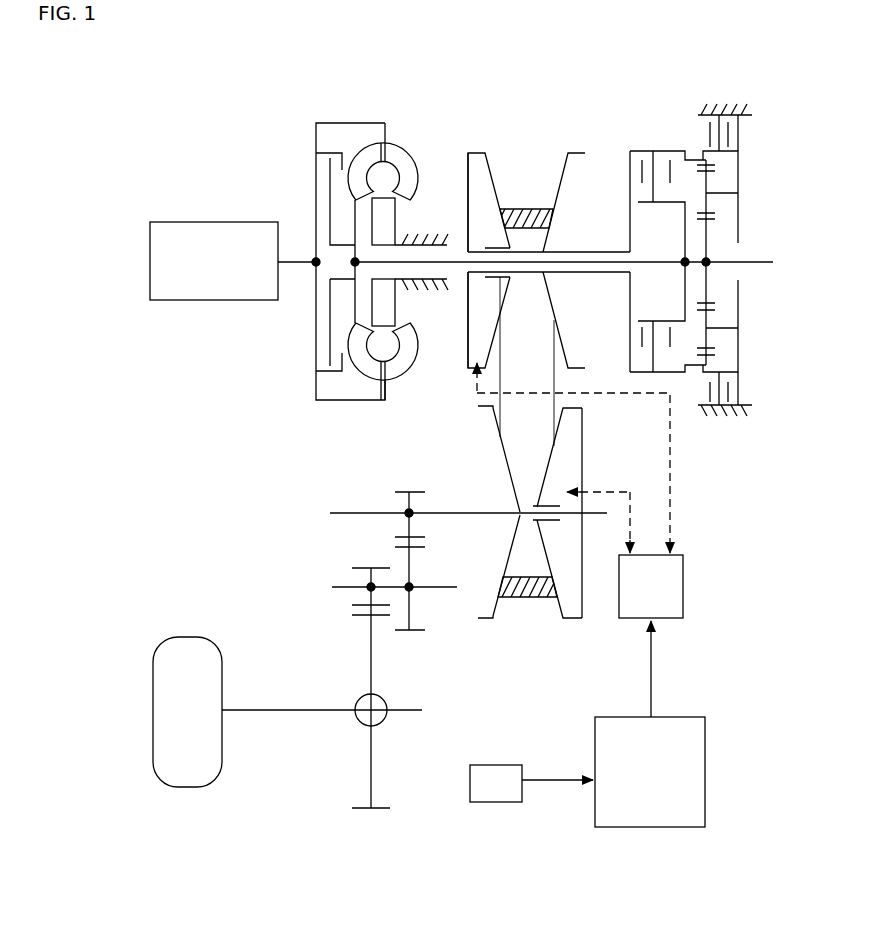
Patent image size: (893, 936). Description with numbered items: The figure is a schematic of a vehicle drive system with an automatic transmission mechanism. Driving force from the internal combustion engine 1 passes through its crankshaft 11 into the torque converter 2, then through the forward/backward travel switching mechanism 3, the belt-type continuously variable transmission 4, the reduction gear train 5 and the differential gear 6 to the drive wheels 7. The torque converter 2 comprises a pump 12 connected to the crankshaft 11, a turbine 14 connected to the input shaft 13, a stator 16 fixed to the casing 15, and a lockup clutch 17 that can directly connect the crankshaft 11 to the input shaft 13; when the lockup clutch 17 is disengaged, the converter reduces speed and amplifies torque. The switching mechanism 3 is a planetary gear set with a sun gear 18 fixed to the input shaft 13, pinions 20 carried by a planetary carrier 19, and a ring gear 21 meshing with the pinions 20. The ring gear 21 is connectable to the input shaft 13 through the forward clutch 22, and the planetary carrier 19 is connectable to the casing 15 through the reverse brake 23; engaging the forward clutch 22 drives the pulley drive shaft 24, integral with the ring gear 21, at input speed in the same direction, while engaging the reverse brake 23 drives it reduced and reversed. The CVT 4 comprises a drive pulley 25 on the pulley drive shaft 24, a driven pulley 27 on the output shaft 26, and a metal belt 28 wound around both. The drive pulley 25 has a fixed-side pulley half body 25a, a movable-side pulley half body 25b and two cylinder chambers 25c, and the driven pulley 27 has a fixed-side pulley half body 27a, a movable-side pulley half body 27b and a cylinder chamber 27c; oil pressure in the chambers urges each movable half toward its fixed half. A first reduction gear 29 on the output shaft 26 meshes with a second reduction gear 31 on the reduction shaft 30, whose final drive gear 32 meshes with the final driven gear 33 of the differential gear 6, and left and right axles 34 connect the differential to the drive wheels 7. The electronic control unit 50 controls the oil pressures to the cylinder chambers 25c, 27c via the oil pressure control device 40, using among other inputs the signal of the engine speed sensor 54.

The internal combustion engine 1 is at (163, 221).
The crankshaft 11 is at (290, 258).
The torque converter 2 is at (379, 103).
The lockup clutch 17 is at (316, 132).
The turbine 14 is at (367, 148).
The stator 16 is at (392, 193).
The pump 12 is at (403, 147).
The casing 15 is at (420, 235).
The input shaft 13 is at (456, 274).
The belt-type continuously variable transmission 4 is at (560, 92).
The drive pulley 25 is at (572, 123).
The fixed-side pulley half body 25a is at (563, 170).
The movable-side pulley half body 25b is at (495, 170).
The cylinder chambers 25c is at (470, 150).
The pulley drive shaft 24 is at (594, 250).
The metal belt 28 is at (497, 405).
The forward/backward travel switching mechanism 3 is at (656, 108).
The forward clutch 22 is at (650, 151).
The planetary carrier 19 is at (740, 206).
The reverse brake 23 is at (733, 133).
The sun gear 18 is at (708, 224).
The ring gear 21 is at (713, 165).
The pinions 20 is at (710, 190).
The driven pulley 27 is at (570, 657).
The fixed-side pulley half body 27a is at (498, 612).
The movable-side pulley half body 27b is at (558, 612).
The cylinder chamber 27c is at (570, 432).
The output shaft 26 is at (360, 513).
The reduction gear train 5 is at (286, 509).
The first reduction gear 29 is at (417, 492).
The second reduction gear 31 is at (425, 542).
The reduction shaft 30 is at (338, 587).
The final drive gear 32 is at (378, 568).
The final driven gear 33 is at (358, 615).
The differential gear 6 is at (385, 700).
The axles 34 is at (282, 712).
The drive wheels 7 is at (187, 637).
The oil pressure control device 40 is at (683, 578).
The electronic control unit 50 is at (705, 742).
The engine speed sensor 54 is at (492, 765).